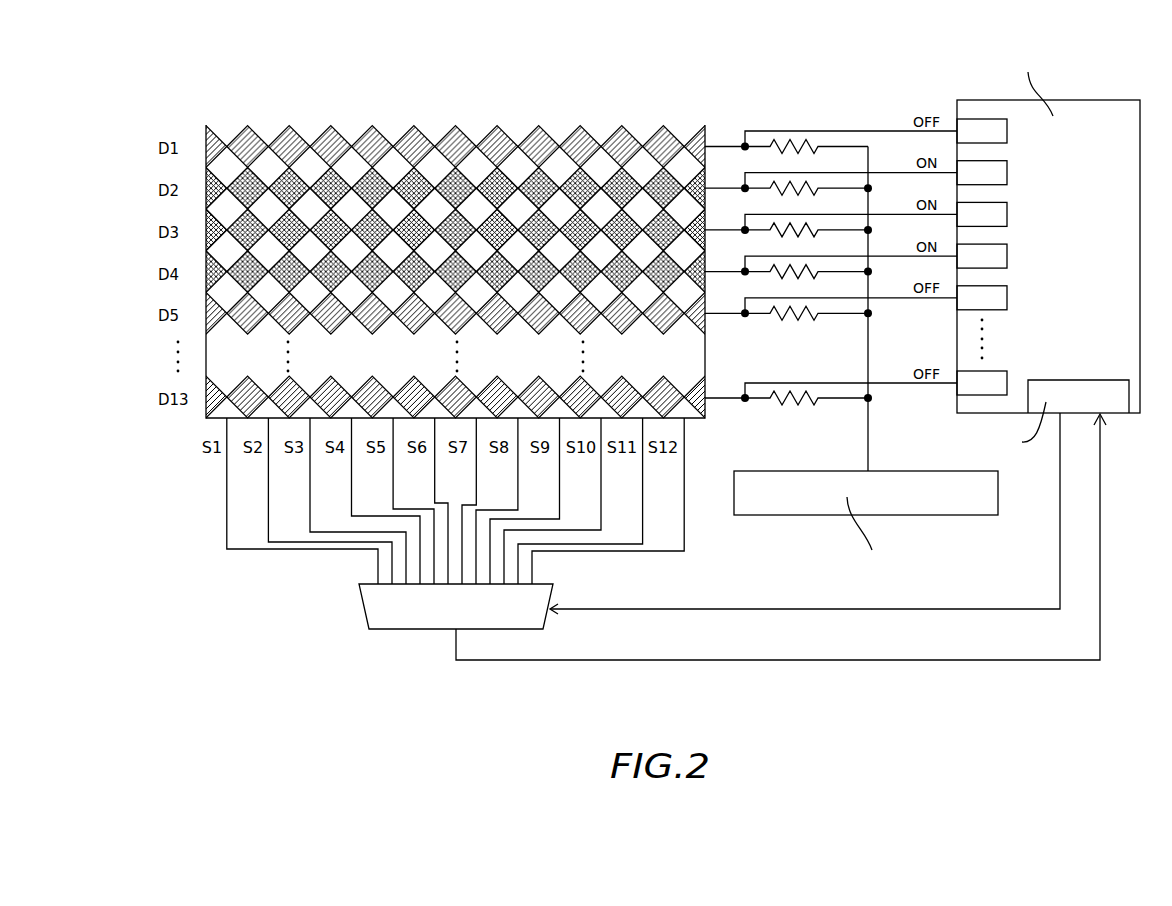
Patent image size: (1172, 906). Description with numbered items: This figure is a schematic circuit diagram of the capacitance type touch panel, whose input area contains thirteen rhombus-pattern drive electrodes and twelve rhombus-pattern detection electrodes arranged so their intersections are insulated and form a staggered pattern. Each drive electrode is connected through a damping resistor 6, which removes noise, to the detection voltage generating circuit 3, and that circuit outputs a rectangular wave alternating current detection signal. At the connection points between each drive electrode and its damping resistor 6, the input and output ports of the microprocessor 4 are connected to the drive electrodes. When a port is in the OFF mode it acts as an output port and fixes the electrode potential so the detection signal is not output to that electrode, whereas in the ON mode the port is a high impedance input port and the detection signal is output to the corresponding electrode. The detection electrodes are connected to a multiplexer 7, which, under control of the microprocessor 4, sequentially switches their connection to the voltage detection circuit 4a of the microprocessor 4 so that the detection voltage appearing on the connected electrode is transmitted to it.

The detection voltage generating circuit 3 is at (953, 509).
The microprocessor 4 is at (1057, 319).
The voltage detection circuit 4a is at (1122, 409).
The damping resistor 6 is at (792, 140).
The multiplexer 7 is at (364, 617).